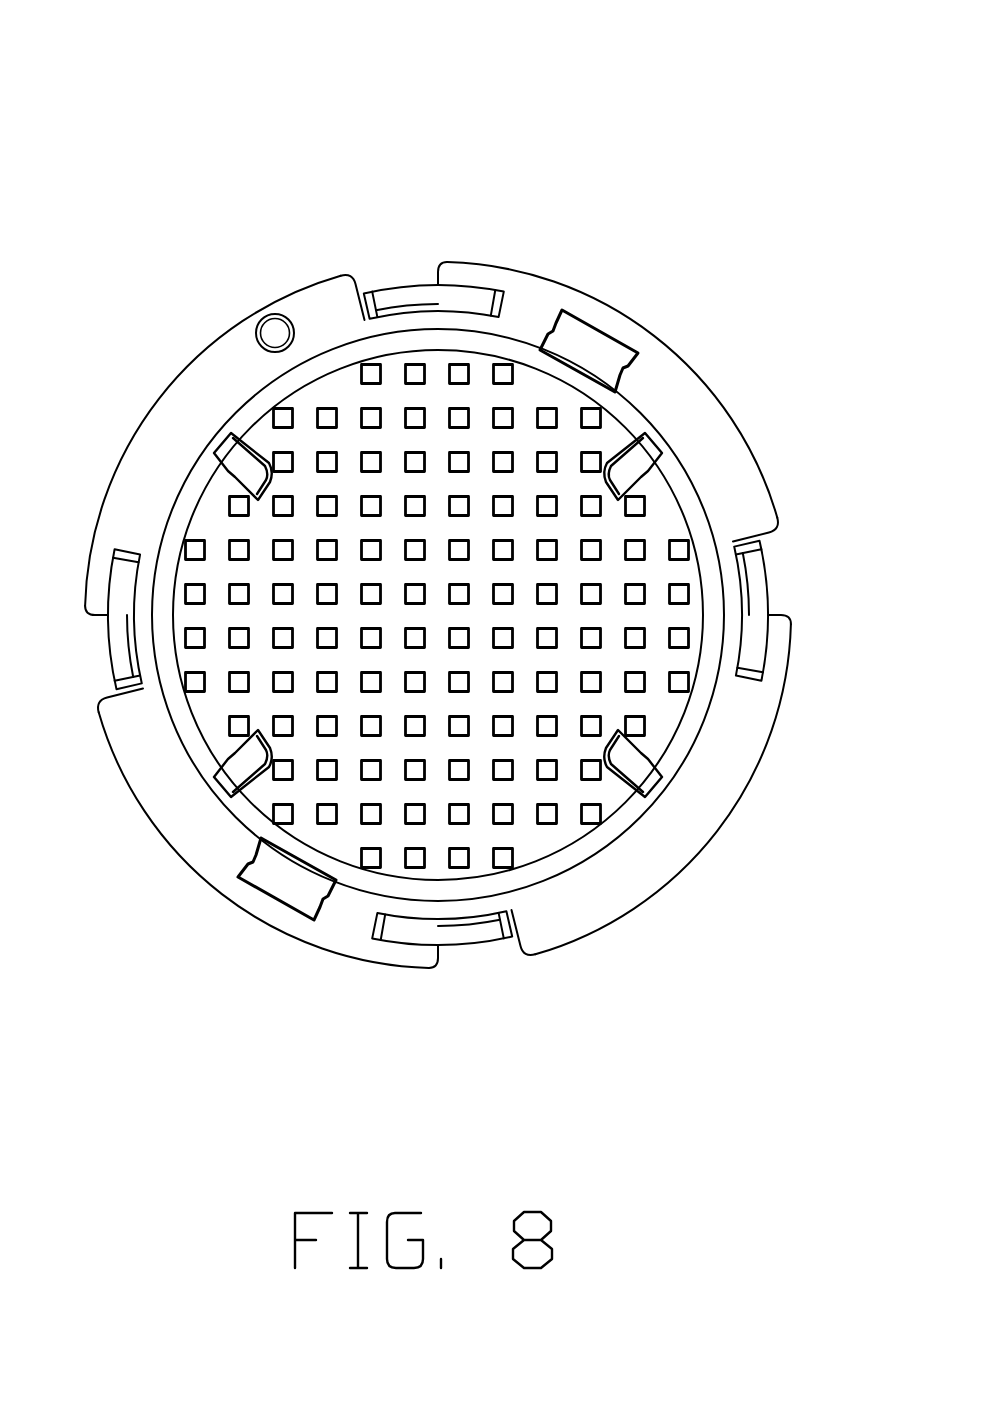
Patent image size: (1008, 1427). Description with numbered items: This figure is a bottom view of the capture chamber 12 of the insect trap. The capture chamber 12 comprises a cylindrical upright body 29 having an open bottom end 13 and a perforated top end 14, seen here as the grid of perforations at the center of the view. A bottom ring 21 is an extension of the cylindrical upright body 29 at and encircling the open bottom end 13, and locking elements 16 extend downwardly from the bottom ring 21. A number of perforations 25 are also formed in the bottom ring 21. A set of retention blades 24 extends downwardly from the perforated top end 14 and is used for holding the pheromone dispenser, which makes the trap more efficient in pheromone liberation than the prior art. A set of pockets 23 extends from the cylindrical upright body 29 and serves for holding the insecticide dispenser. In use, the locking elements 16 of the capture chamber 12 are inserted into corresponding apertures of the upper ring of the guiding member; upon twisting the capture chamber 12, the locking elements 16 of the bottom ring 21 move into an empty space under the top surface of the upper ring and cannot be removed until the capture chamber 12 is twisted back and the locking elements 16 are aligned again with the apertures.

The capture chamber 12 is at (183, 243).
The open bottom end 13 is at (692, 483).
The perforated top end 14 is at (522, 400).
The locking elements 16 is at (421, 293).
The bottom ring 21 is at (687, 363).
The set of pockets 23 is at (602, 327).
The set of retention blades 24 is at (647, 763).
The perforations 25 is at (267, 313).
The cylindrical upright body 29 is at (582, 848).